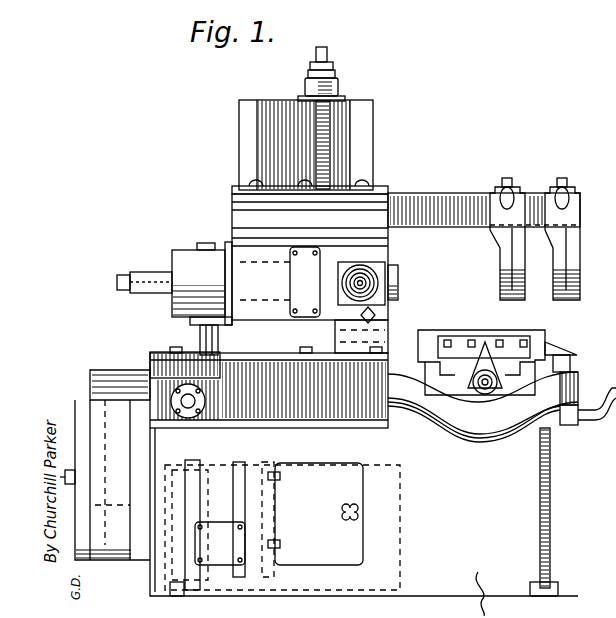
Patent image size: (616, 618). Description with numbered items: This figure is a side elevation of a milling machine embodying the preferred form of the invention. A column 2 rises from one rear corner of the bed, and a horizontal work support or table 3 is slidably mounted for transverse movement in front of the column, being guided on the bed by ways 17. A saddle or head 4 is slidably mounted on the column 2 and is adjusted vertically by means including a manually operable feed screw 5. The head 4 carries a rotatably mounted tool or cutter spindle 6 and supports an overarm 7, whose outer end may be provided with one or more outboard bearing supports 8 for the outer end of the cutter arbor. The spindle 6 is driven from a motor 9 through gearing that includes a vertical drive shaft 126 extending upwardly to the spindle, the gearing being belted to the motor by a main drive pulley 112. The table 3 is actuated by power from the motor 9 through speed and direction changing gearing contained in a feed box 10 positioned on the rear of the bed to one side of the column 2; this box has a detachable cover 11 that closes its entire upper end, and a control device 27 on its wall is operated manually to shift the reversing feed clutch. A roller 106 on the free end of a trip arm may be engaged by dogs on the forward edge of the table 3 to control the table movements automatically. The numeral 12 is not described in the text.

The column 2 is at (373, 113).
The feed screw 5 is at (316, 150).
The saddle or head 4 is at (378, 188).
The overarm 7 is at (460, 200).
The outboard bearing supports 8 is at (515, 245).
The tool or cutter spindle 6 is at (398, 278).
The work support or table 3 is at (162, 410).
The vertical drive shaft 126 is at (205, 335).
The main drive pulley 112 is at (100, 410).
The control device 27 is at (195, 418).
The motor 9 is at (238, 478).
The feed box 10 is at (312, 405).
The detachable cover 11 is at (258, 360).
The ways 17 is at (460, 396).
The roller 106 is at (562, 365).
The pipe 12 is at (605, 425).